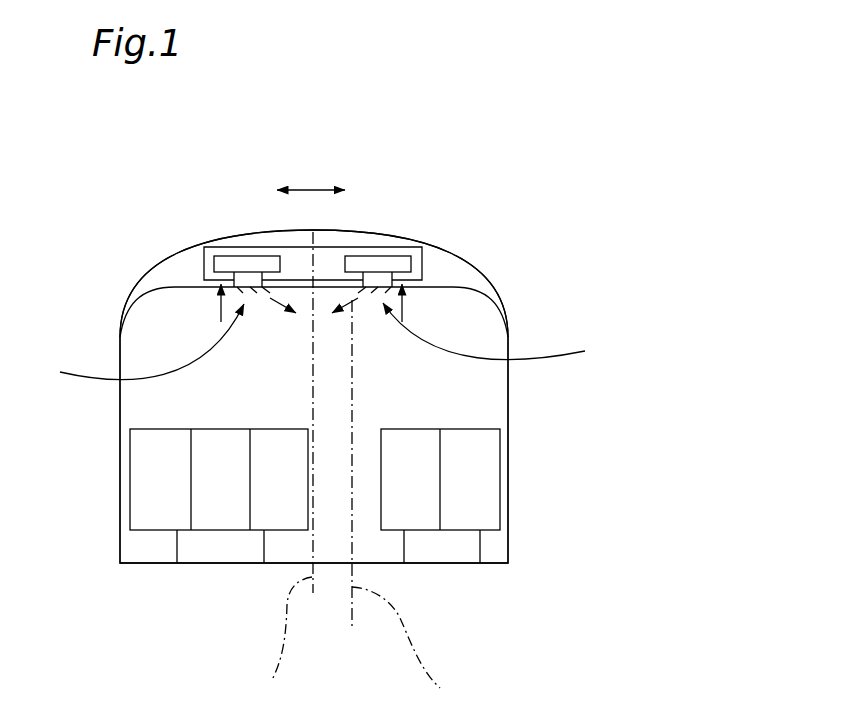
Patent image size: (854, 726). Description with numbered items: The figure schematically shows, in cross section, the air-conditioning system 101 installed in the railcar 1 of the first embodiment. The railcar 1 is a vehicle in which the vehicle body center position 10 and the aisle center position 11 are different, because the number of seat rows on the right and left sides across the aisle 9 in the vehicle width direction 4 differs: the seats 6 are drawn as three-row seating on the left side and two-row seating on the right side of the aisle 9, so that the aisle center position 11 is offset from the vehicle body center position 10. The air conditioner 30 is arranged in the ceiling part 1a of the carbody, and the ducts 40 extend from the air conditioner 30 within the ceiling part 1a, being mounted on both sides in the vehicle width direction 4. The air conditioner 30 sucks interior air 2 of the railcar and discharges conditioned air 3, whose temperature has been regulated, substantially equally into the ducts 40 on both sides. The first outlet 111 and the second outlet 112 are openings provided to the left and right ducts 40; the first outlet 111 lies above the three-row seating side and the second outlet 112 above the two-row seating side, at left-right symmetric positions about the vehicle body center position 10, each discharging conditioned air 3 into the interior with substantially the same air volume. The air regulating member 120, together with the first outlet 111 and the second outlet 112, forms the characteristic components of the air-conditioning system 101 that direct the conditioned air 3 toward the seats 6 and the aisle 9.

The air-conditioning system 101 is at (706, 207).
The railcar 1 is at (512, 518).
The ceiling part 1a is at (457, 273).
The air conditioner 30 is at (370, 255).
The duct 40 is at (228, 267).
The first outlet 111 is at (248, 276).
The second outlet 112 is at (386, 272).
The vehicle width direction 4 is at (312, 190).
The interior air 2 is at (221, 311).
The conditioned air 3 is at (278, 305).
The air regulating member 120 is at (325, 344).
The seats 6 is at (131, 467).
The aisle 9 is at (365, 433).
The vehicle body center position 10 is at (284, 471).
The aisle center position 11 is at (413, 501).